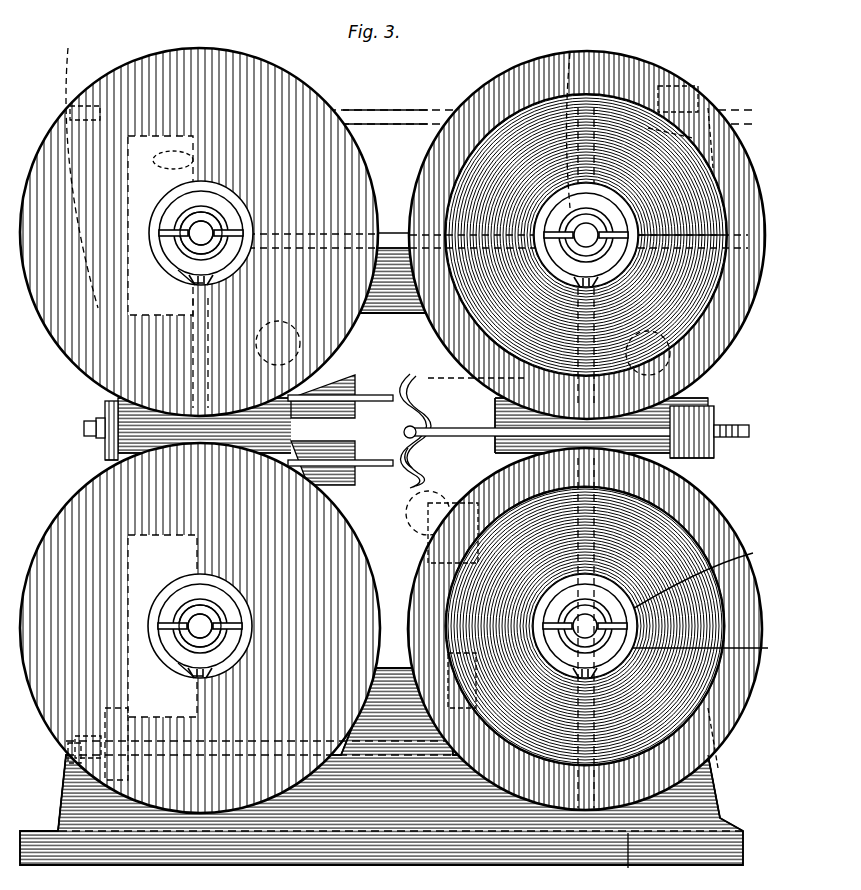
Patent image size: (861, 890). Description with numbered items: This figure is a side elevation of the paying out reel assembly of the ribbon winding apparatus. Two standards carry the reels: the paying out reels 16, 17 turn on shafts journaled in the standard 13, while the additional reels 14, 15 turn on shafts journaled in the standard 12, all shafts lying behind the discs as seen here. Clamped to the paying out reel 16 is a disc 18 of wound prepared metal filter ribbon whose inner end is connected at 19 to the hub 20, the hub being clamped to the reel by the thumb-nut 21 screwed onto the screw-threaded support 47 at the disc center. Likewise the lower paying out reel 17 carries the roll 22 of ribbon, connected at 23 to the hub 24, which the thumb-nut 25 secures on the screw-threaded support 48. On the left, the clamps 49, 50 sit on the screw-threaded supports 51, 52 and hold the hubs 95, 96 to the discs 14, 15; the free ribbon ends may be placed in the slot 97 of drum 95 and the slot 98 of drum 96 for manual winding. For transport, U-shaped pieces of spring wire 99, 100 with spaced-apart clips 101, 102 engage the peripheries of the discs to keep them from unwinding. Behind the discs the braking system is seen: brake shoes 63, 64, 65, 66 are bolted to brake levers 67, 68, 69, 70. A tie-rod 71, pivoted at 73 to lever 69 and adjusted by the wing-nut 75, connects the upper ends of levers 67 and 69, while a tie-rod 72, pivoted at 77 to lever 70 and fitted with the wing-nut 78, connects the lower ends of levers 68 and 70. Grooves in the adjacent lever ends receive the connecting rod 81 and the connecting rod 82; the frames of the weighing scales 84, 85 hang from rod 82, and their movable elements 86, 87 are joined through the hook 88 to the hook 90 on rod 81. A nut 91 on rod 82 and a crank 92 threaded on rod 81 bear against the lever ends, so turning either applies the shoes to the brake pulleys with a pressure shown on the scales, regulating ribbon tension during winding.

The standard 12 is at (95, 430).
The standard 13 is at (705, 445).
The reel 14 is at (255, 68).
The reel 15 is at (325, 565).
The paying out reel 16 is at (690, 112).
The lower paying out reel 17 is at (715, 535).
The disc of prepared metal filter ribbon 18 is at (625, 183).
The inner end connection 19 is at (600, 262).
The hub 20 is at (715, 227).
The thumb-nut 21 is at (630, 205).
The roll of wound prepared metal filter ribbon 22 is at (690, 615).
The inner end connection 23 is at (590, 652).
The hub 24 is at (701, 648).
The thumb-nut 25 is at (702, 575).
The screw-threaded support 47 is at (578, 227).
The screw-threaded support 48 is at (580, 615).
The thumb-nut clamp 49 is at (215, 222).
The thumb-nut clamp 50 is at (212, 612).
The screw-threaded support 51 is at (200, 218).
The screw-threaded support 52 is at (198, 612).
The brake shoe 63 is at (160, 225).
The brake shoe 64 is at (62, 735).
The brake shoe 65 is at (715, 110).
The brake shoe 66 is at (718, 725).
The brake lever 67 is at (97, 400).
The brake lever 68 is at (97, 452).
The brake lever 69 is at (685, 400).
The brake lever 70 is at (700, 452).
The tie-rod 71 is at (390, 102).
The tie-rod 72 is at (172, 740).
The pivot 73 is at (690, 78).
The wing-nut 75 is at (75, 98).
The pivot 77 is at (705, 760).
The wing-nut 78 is at (56, 775).
The connecting rod 81 is at (435, 420).
The connecting rod 82 is at (76, 420).
The weighing scale 84 is at (300, 372).
The weighing scale 85 is at (305, 440).
The movable element 86 is at (345, 387).
The movable element 87 is at (358, 442).
The hook 88 is at (395, 366).
The hook 90 is at (404, 440).
The nut 91 is at (88, 414).
The crank 92 is at (728, 430).
The hub 95 is at (193, 222).
The hub 96 is at (170, 598).
The slot 97 is at (172, 264).
The slot 98 is at (172, 658).
The U-shaped piece of spring wire 99 is at (578, 114).
The U-shaped piece of spring wire 100 is at (452, 680).
The clip 101 is at (380, 281).
The clip 102 is at (415, 590).